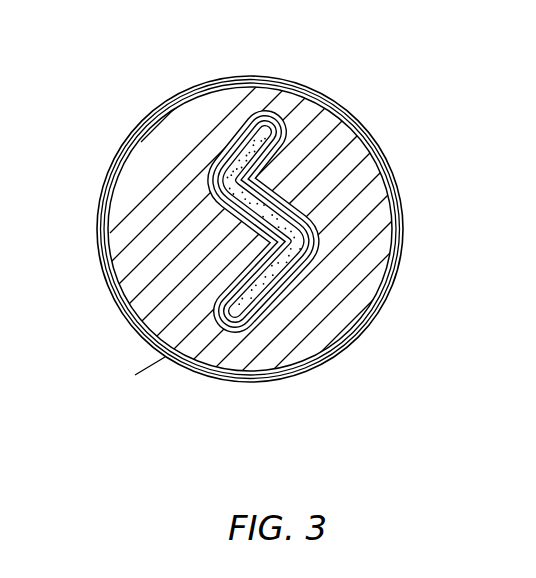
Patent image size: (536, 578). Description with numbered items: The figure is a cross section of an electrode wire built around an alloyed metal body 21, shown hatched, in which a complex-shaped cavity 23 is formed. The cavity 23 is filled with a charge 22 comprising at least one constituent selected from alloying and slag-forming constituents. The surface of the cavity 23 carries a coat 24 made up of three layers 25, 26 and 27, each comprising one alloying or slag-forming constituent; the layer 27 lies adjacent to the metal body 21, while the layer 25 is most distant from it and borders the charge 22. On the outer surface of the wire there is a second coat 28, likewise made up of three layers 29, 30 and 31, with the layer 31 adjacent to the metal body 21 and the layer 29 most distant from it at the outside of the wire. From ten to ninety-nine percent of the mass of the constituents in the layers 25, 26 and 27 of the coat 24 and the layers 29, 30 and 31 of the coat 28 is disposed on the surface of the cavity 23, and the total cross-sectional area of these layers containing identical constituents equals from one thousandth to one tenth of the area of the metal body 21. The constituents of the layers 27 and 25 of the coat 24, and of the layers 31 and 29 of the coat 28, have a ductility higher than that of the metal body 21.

The alloyed metal body 21 is at (335, 145).
The charge 22 is at (322, 230).
The complex-shaped cavity 23 is at (310, 243).
The coat 24 is at (315, 260).
The layer 25 is at (255, 310).
The layer 26 is at (238, 325).
The layer 27 is at (139, 382).
The coat 28 is at (113, 175).
The layer 29 is at (140, 127).
The layer 30 is at (192, 92).
The layer 31 is at (265, 92).